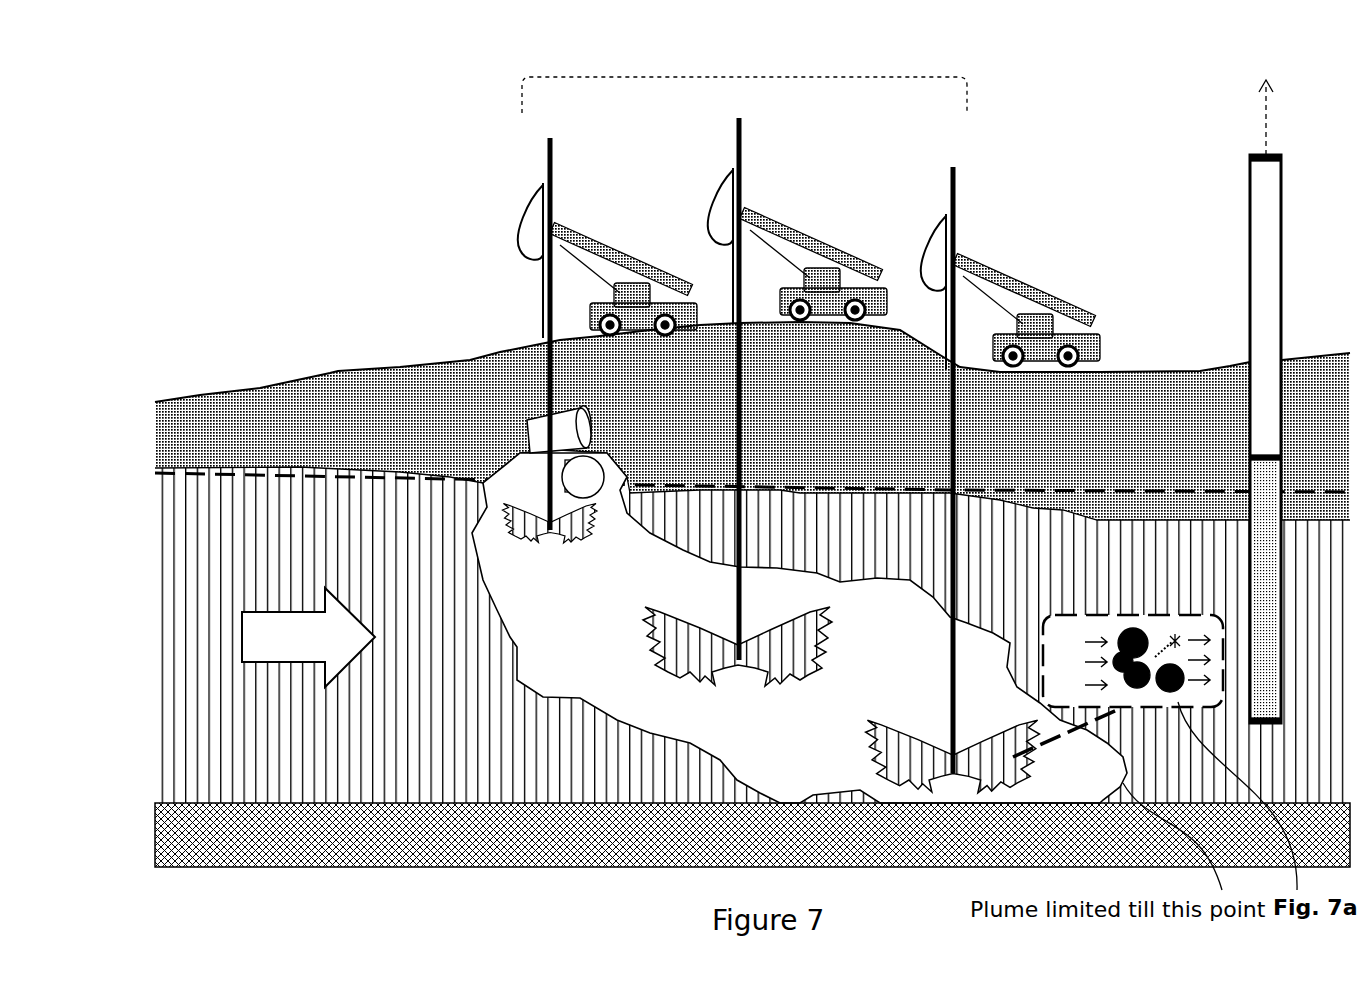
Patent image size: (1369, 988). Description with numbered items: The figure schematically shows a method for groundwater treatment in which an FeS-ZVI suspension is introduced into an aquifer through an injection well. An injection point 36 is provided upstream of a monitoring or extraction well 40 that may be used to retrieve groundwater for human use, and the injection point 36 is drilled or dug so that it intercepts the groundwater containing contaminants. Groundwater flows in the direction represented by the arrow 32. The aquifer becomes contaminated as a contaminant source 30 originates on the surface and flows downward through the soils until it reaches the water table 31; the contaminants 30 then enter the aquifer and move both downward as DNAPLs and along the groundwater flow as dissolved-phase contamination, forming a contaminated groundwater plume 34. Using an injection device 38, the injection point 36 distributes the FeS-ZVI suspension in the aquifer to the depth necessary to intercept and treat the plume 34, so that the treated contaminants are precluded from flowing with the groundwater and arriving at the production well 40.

The contaminants 30 is at (522, 455).
The water table 31 is at (257, 473).
The arrow defining direction of ground water flow 32 is at (308, 637).
The plume of contaminated water 34 is at (630, 730).
The injection point 36 is at (743, 77).
The injection device 38 is at (608, 258).
The injection, extraction or monitoring well 40 is at (1280, 205).